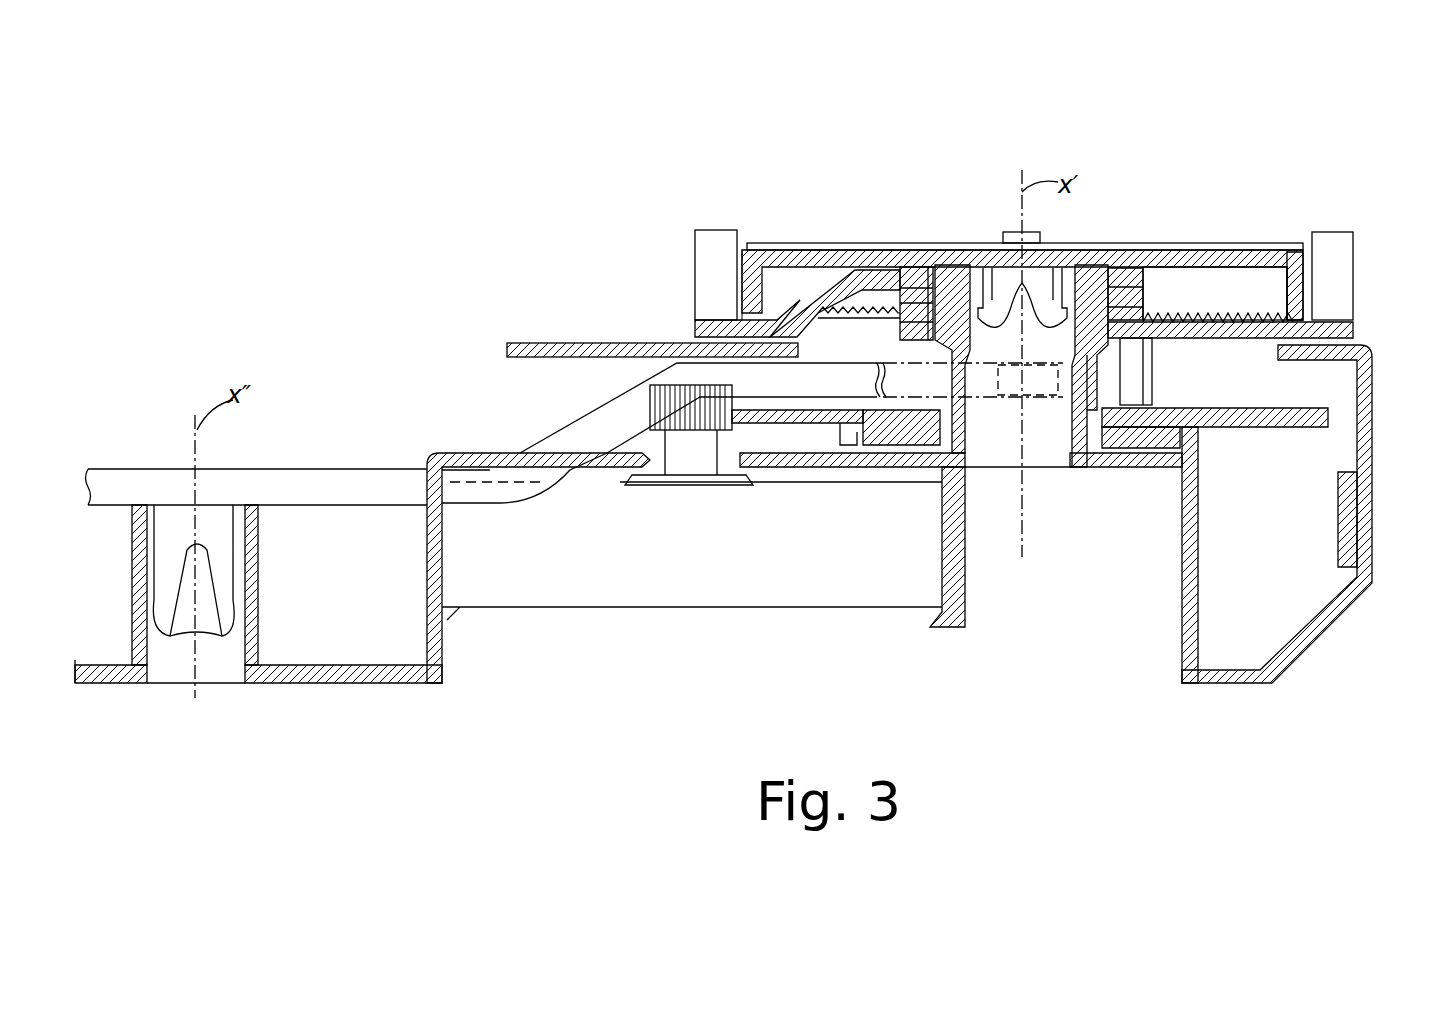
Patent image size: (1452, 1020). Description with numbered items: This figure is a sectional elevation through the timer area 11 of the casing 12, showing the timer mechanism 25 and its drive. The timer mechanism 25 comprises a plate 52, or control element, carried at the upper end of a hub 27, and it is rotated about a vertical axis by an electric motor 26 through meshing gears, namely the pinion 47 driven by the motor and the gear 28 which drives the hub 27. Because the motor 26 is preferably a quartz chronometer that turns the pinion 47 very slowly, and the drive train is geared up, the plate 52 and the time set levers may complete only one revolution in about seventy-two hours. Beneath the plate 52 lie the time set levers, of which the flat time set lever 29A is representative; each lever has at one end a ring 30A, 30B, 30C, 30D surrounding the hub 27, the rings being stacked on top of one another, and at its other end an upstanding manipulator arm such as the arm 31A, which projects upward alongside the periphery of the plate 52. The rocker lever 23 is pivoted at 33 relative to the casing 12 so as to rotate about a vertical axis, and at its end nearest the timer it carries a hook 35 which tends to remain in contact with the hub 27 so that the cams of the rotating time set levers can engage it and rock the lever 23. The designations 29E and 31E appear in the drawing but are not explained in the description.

The timer area 11 is at (1333, 198).
The casing 12 is at (568, 343).
The rocker lever 23 is at (340, 470).
The timer mechanism 25 is at (833, 247).
The electric motor 26 is at (668, 575).
The hub 27 is at (1100, 385).
The gear 28 is at (1320, 418).
The time set lever 29A is at (1222, 337).
The spring 29E is at (817, 287).
The ring 30A is at (908, 335).
The ring 30B is at (1145, 300).
The ring 30C is at (1150, 290).
The ring 30D is at (925, 270).
The manipulator arm 31A is at (1342, 262).
The end block 31E is at (703, 243).
The pivot 33 is at (223, 560).
The hook 35 is at (1012, 387).
The pinion 47 is at (650, 400).
The plate 52 is at (1265, 252).